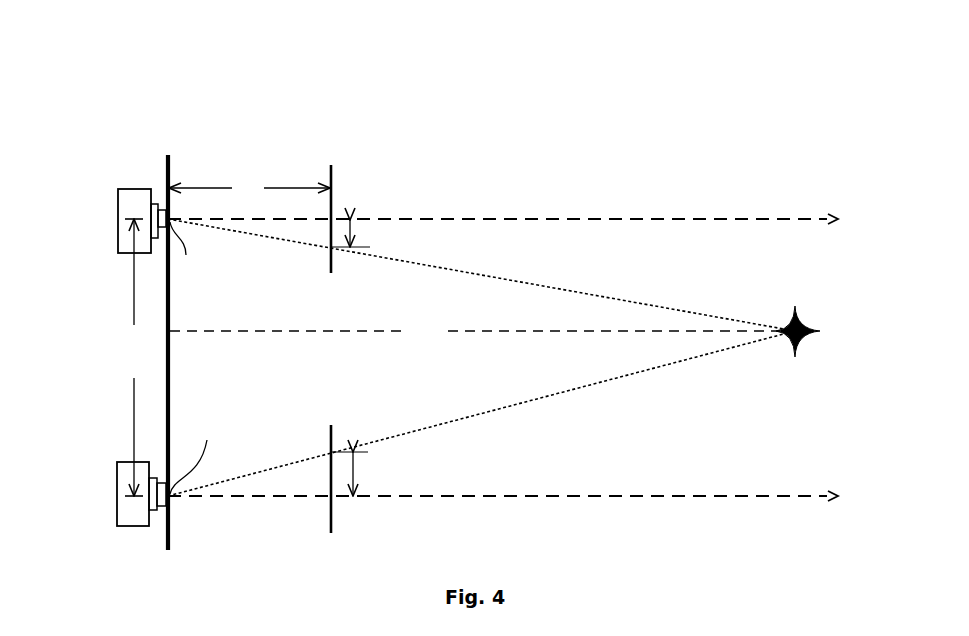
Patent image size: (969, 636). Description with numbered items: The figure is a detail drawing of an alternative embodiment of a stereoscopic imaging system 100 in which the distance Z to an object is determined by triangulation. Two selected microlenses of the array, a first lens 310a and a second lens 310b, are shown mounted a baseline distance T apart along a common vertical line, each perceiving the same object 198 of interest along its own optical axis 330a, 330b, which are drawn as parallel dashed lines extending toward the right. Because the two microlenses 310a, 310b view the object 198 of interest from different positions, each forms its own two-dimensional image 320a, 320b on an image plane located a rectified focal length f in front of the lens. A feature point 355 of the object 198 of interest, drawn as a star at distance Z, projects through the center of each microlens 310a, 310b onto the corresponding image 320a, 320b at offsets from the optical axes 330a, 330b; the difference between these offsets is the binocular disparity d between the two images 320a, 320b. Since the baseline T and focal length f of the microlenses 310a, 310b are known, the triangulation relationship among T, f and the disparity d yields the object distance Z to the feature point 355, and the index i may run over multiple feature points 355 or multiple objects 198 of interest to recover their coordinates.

The stereo camera system 100 is at (829, 51).
The first lens 310a is at (133, 189).
The second lens 310b is at (128, 462).
The two-dimensional image 320a is at (330, 165).
The two-dimensional image 320b is at (331, 426).
The optical axis 330a is at (806, 219).
The optical axis 330b is at (806, 496).
The feature point 355 is at (812, 331).
The object of interest 198 is at (792, 362).